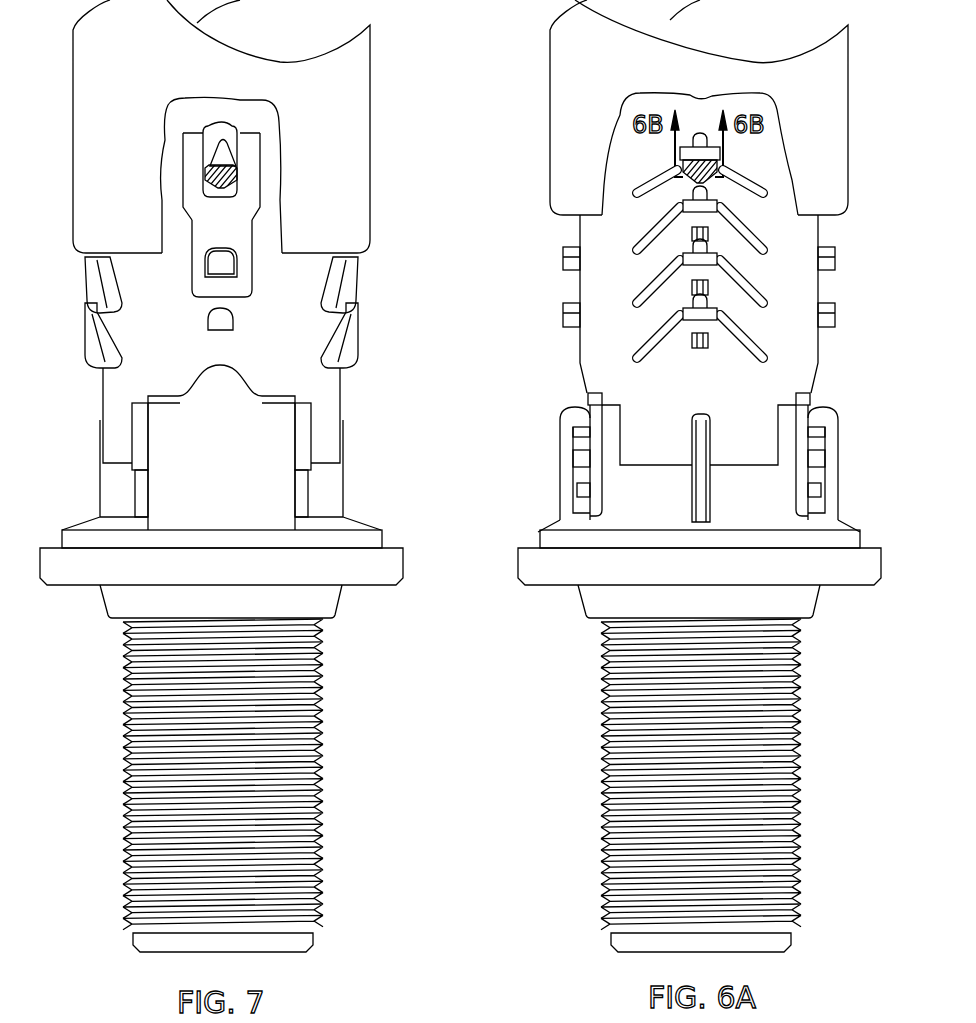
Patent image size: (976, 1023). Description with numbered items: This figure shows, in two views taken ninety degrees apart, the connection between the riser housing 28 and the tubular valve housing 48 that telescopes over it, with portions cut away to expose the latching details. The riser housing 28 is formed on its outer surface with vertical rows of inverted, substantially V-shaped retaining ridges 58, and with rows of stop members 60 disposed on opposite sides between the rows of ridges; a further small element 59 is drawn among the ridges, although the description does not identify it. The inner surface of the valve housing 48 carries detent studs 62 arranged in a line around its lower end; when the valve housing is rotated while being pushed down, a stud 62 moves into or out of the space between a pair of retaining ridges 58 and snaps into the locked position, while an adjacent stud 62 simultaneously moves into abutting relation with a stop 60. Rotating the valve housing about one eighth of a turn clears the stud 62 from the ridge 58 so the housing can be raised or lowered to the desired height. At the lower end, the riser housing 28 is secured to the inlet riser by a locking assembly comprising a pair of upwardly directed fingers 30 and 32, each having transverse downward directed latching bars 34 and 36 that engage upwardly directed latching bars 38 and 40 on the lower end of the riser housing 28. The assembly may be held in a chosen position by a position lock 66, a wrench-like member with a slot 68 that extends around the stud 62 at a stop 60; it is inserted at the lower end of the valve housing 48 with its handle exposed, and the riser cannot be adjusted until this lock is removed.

In FIG. 7, the riser housing 28 is at (135, 383).
In FIG. 6A, the upwardly directed finger 30 is at (560, 440).
In FIG. 6A, the upwardly directed finger 32 is at (830, 438).
In FIG. 6A, the downward directed latching bar 34 is at (580, 413).
In FIG. 6A, the downward directed latching bar 36 is at (815, 407).
In FIG. 6A, the upwardly directed latching bar 38 is at (573, 487).
In FIG. 6A, the upwardly directed latching bar 40 is at (822, 487).
In FIG. 7, the valve housing 48 is at (368, 82).
In FIG. 7, the retaining ridge 58 is at (357, 275).
In FIG. 6A, the retaining ridge 58 is at (747, 173).
In FIG. 6A, the stop 59 is at (710, 343).
In FIG. 7, the stop member 60 is at (228, 126).
In FIG. 6A, the stop member 60 is at (835, 263).
In FIG. 7, the detent stud 62 is at (232, 183).
In FIG. 6A, the detent stud 62 is at (710, 182).
In FIG. 7, the position lock 66 is at (180, 265).
In FIG. 7, the slot 68 is at (177, 107).